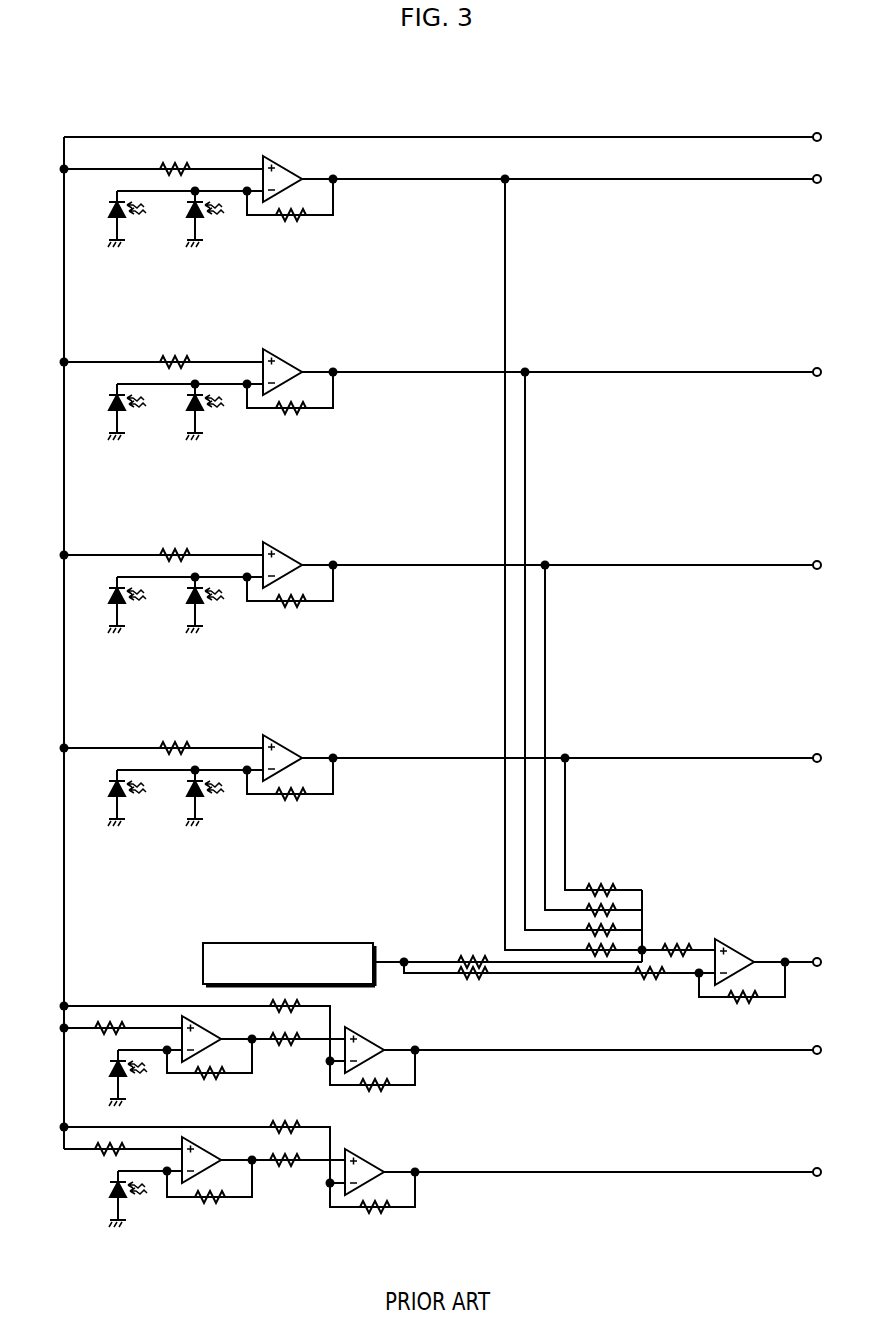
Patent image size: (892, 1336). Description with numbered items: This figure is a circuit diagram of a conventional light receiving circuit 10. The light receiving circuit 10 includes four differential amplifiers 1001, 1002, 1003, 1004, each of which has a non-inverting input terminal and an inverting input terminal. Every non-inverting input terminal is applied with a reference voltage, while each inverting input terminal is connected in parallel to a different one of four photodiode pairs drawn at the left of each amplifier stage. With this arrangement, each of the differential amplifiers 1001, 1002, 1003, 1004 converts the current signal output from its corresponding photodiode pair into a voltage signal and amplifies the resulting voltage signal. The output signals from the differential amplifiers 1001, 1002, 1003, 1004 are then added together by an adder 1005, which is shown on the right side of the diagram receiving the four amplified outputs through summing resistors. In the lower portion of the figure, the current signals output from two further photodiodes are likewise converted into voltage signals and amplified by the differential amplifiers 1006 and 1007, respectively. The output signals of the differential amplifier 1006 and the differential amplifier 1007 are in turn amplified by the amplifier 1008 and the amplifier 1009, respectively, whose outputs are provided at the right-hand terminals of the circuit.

The light receiving circuit 10 is at (464, 83).
The differential amplifier 1001 is at (281, 163).
The differential amplifier 1002 is at (281, 358).
The differential amplifier 1003 is at (281, 552).
The differential amplifier 1004 is at (281, 745).
The adder 1005 is at (733, 948).
The differential amplifier 1006 is at (203, 1028).
The differential amplifier 1007 is at (202, 1148).
The amplifier 1008 is at (363, 1036).
The amplifier 1009 is at (363, 1158).